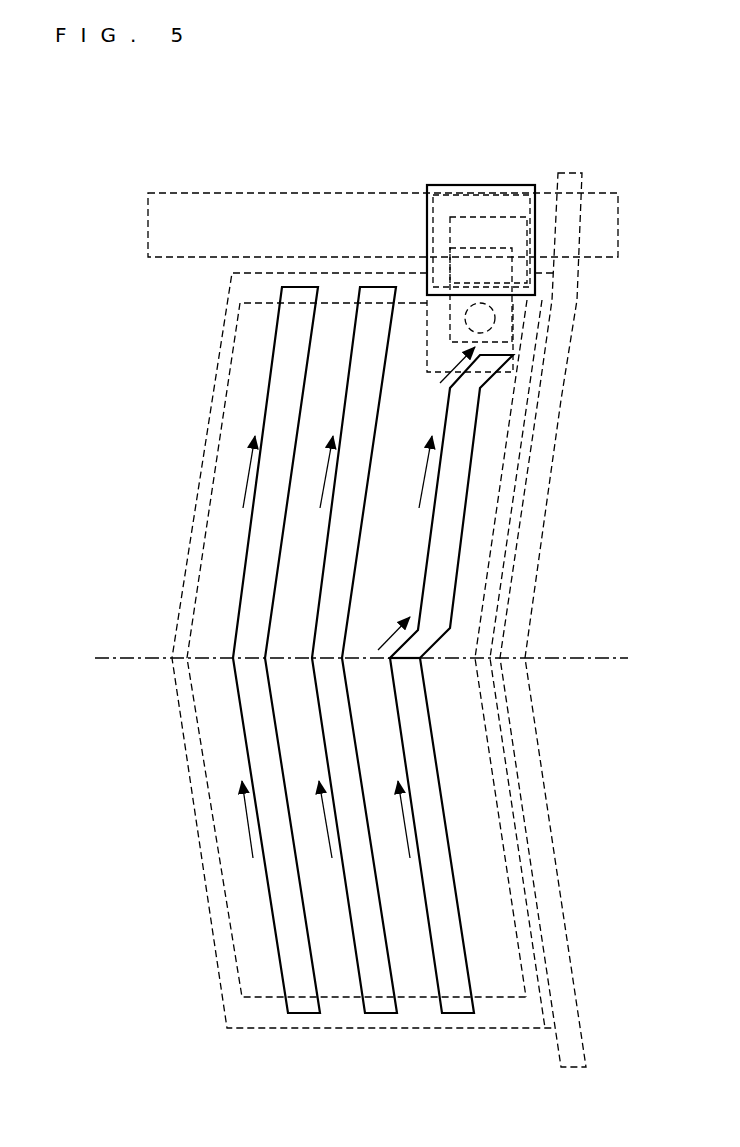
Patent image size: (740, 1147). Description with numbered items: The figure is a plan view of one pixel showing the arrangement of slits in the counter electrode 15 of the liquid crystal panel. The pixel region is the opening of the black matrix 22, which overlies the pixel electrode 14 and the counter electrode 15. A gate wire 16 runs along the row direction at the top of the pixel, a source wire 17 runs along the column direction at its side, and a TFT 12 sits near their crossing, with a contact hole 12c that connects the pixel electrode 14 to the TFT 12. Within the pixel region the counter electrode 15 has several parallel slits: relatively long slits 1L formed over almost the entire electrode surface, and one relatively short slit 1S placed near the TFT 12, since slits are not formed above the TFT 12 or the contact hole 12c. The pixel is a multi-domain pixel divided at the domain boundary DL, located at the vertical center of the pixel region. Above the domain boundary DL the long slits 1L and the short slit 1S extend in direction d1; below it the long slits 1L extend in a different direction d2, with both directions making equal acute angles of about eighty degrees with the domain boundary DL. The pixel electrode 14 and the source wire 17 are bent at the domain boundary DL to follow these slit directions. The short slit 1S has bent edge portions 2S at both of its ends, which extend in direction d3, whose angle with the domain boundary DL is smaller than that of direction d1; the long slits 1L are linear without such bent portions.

The gate wire 16 is at (275, 192).
The TFT 12 is at (445, 185).
The contact hole 12c is at (496, 318).
The pixel electrode 14 is at (535, 893).
The black matrix 22 is at (510, 423).
The source wire 17 is at (540, 545).
The counter electrode 15 is at (498, 937).
The long slit 1L is at (295, 330).
The short slit 1S is at (455, 470).
The bent edge portion 2S is at (490, 378).
The domain boundary DL is at (377, 663).
The direction d1 is at (328, 488).
The direction d2 is at (331, 835).
The direction d3 is at (421, 498).